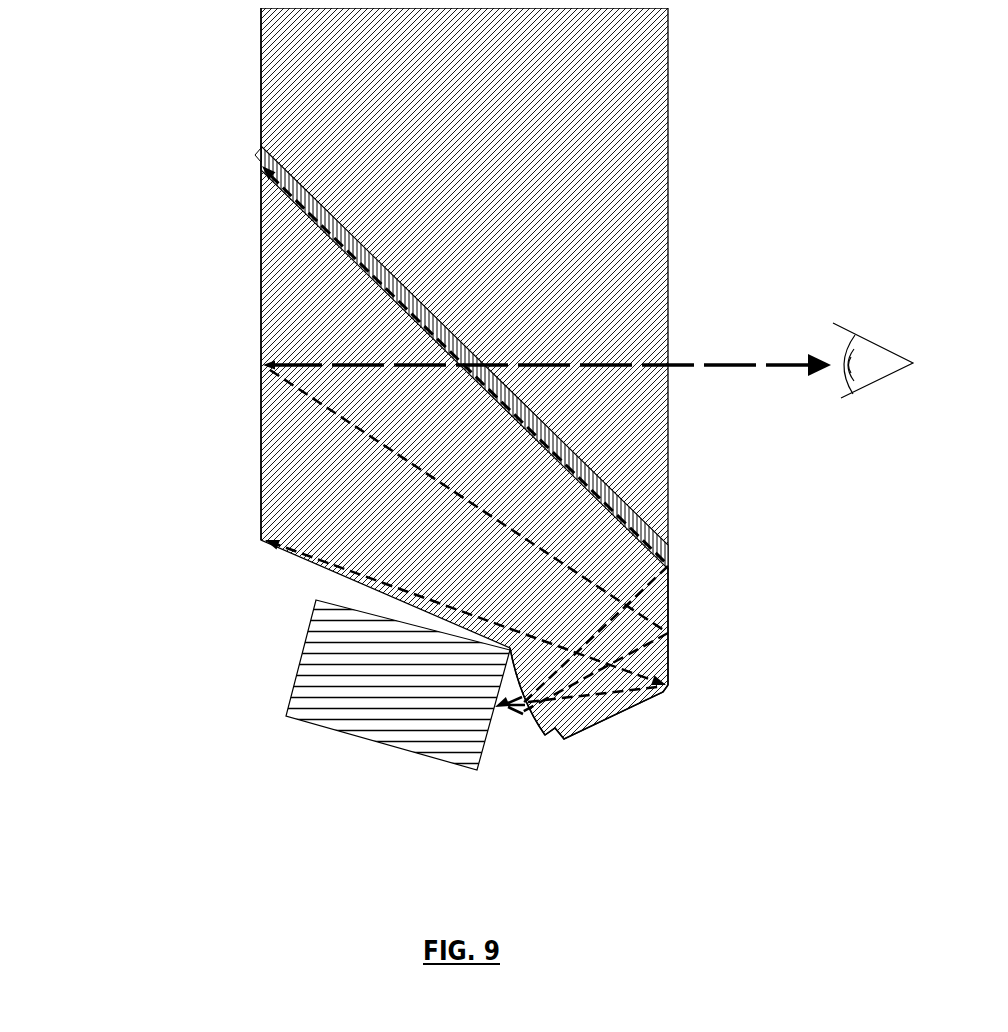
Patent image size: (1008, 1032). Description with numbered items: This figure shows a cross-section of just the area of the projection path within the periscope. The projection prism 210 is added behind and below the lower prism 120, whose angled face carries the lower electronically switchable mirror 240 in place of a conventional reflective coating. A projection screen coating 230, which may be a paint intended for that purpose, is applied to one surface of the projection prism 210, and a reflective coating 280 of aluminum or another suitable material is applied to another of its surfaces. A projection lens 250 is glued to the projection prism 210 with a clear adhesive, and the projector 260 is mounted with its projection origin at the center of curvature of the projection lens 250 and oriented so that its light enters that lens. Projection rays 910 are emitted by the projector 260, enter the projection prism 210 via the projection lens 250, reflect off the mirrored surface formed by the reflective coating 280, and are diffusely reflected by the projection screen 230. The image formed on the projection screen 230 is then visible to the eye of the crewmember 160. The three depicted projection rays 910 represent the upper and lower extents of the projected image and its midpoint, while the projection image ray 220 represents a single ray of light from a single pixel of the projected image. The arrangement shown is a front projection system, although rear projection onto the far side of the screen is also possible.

The lower prism 120 is at (577, 136).
The eye of the crewmember 160 is at (863, 328).
The projection prism 210 is at (477, 454).
The projection image ray 220 is at (253, 312).
The projection screen coating 230 is at (242, 182).
The lower electronically switchable mirror 240 is at (423, 310).
The projection lens 250 is at (558, 732).
The projector 260 is at (411, 687).
The reflective coating 280 is at (672, 600).
The projection rays 910 is at (514, 698).